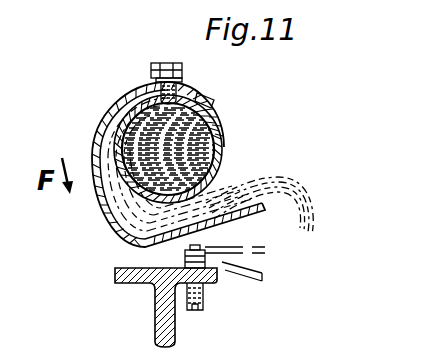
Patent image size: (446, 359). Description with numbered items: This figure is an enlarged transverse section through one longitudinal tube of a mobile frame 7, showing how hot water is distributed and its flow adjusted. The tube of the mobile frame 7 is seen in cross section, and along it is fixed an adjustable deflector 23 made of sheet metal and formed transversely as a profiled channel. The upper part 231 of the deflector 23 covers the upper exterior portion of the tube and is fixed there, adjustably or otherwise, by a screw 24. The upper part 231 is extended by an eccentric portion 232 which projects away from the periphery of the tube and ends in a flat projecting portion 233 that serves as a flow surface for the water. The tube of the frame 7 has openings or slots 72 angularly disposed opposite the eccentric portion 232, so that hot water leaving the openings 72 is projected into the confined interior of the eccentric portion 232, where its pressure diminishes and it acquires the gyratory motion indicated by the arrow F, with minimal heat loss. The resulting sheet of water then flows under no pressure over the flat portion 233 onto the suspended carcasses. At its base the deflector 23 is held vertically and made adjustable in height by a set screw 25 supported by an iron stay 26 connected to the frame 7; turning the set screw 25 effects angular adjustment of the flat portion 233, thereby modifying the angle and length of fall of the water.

The mobile frame 7 is at (120, 193).
The openings or slots 72 is at (97, 129).
The adjustable deflector 23 is at (110, 96).
The upper part 231 is at (148, 84).
The eccentric portion 232 is at (98, 220).
The flat projecting portion 233 is at (230, 208).
The screw 24 is at (151, 68).
The set screw 25 is at (205, 296).
The iron stay 26 is at (125, 280).